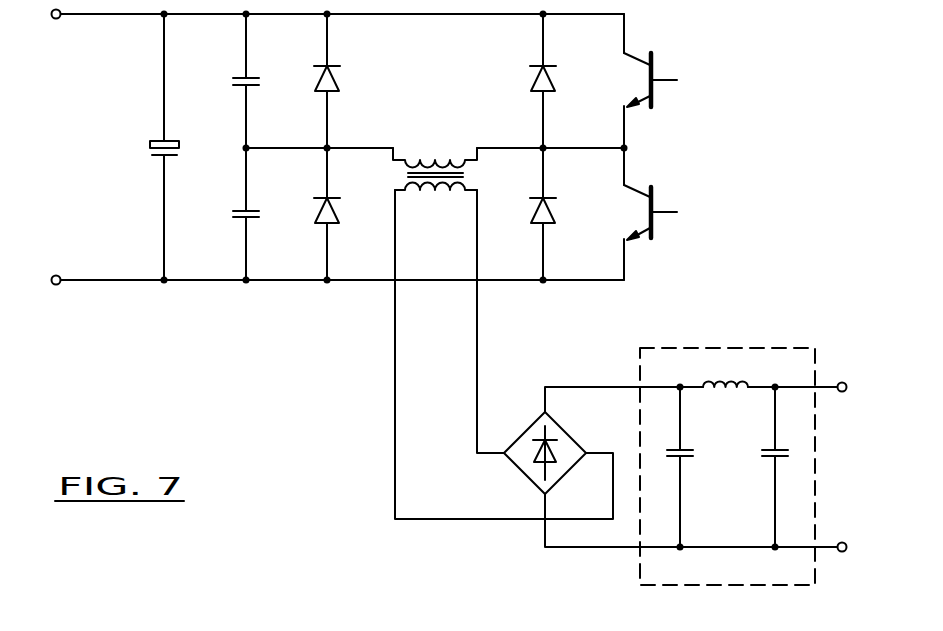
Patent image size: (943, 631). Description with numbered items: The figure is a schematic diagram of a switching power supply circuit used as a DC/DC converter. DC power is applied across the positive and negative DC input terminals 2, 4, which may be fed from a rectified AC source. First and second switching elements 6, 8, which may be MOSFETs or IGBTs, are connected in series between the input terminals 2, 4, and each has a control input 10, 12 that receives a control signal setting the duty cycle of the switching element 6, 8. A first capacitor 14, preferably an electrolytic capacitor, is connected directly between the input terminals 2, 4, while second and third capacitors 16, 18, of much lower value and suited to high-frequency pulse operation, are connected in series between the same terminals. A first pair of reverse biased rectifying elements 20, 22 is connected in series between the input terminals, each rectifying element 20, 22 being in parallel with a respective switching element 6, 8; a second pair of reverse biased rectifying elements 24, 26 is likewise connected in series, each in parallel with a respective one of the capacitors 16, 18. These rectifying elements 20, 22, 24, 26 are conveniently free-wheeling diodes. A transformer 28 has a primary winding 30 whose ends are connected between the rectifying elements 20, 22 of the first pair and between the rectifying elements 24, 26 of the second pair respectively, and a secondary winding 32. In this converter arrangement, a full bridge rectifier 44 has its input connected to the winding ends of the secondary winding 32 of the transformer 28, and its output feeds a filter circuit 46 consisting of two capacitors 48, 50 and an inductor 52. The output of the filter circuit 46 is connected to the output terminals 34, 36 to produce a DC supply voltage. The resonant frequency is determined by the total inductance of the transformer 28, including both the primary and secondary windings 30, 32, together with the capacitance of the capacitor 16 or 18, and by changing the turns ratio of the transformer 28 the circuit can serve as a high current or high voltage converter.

The positive DC input terminal 2 is at (56, 19).
The negative DC input terminal 4 is at (56, 275).
The first switching element 6 is at (683, 81).
The second switching element 8 is at (688, 214).
The control input 10 is at (672, 82).
The control input 12 is at (672, 214).
The first capacitor 14 is at (163, 140).
The second capacitor 16 is at (242, 77).
The third capacitor 18 is at (242, 210).
The rectifying element 20 is at (530, 80).
The rectifying element 22 is at (558, 215).
The rectifying element 24 is at (316, 80).
The rectifying element 26 is at (316, 215).
The transformer 28 is at (425, 174).
The primary winding 30 is at (440, 166).
The secondary winding 32 is at (429, 190).
The output terminal 34 is at (842, 382).
The output terminal 36 is at (842, 542).
The full bridge rectifier 44 is at (518, 471).
The filter circuit 46 is at (727, 430).
The capacitor 48 is at (770, 456).
The capacitor 50 is at (686, 457).
The inductor 52 is at (727, 389).